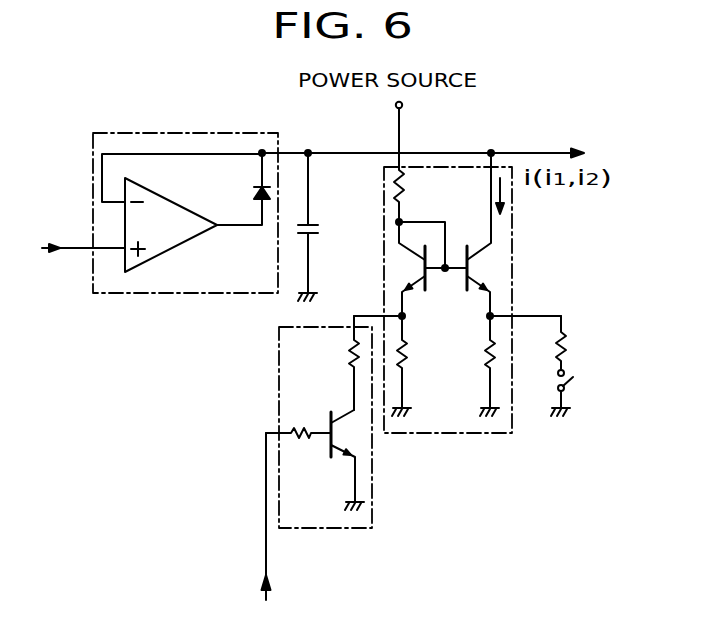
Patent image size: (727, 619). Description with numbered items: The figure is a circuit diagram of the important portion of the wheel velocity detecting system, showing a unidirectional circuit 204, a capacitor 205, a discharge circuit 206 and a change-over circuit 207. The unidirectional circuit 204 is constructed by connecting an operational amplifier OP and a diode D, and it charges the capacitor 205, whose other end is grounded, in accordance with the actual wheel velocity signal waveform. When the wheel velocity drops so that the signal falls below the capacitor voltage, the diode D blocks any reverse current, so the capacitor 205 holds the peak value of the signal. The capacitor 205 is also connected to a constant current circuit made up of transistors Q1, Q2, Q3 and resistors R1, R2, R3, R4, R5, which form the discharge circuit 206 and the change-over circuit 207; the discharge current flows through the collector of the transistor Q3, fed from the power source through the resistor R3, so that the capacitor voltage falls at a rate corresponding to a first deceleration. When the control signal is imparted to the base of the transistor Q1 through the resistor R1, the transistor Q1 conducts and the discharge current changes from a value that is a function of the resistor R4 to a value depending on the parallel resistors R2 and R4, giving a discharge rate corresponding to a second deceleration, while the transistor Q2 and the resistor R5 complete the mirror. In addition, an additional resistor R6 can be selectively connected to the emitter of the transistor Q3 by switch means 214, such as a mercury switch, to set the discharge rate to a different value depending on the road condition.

The unidirectional circuit 204 is at (185, 194).
The capacitor 205 is at (318, 229).
The discharge circuit 206 is at (478, 293).
The change-over circuit 207 is at (294, 422).
The switch means 214 is at (574, 380).
The operational amplifier OP is at (194, 206).
The diode D is at (254, 192).
The resistor R1 is at (300, 426).
The resistor R2 is at (350, 356).
The resistor R3 is at (405, 190).
The resistor R4 is at (406, 350).
The resistor R5 is at (484, 362).
The additional resistor R6 is at (568, 342).
The transistor Q1 is at (327, 444).
The transistor Q2 is at (435, 280).
The transistor Q3 is at (457, 280).